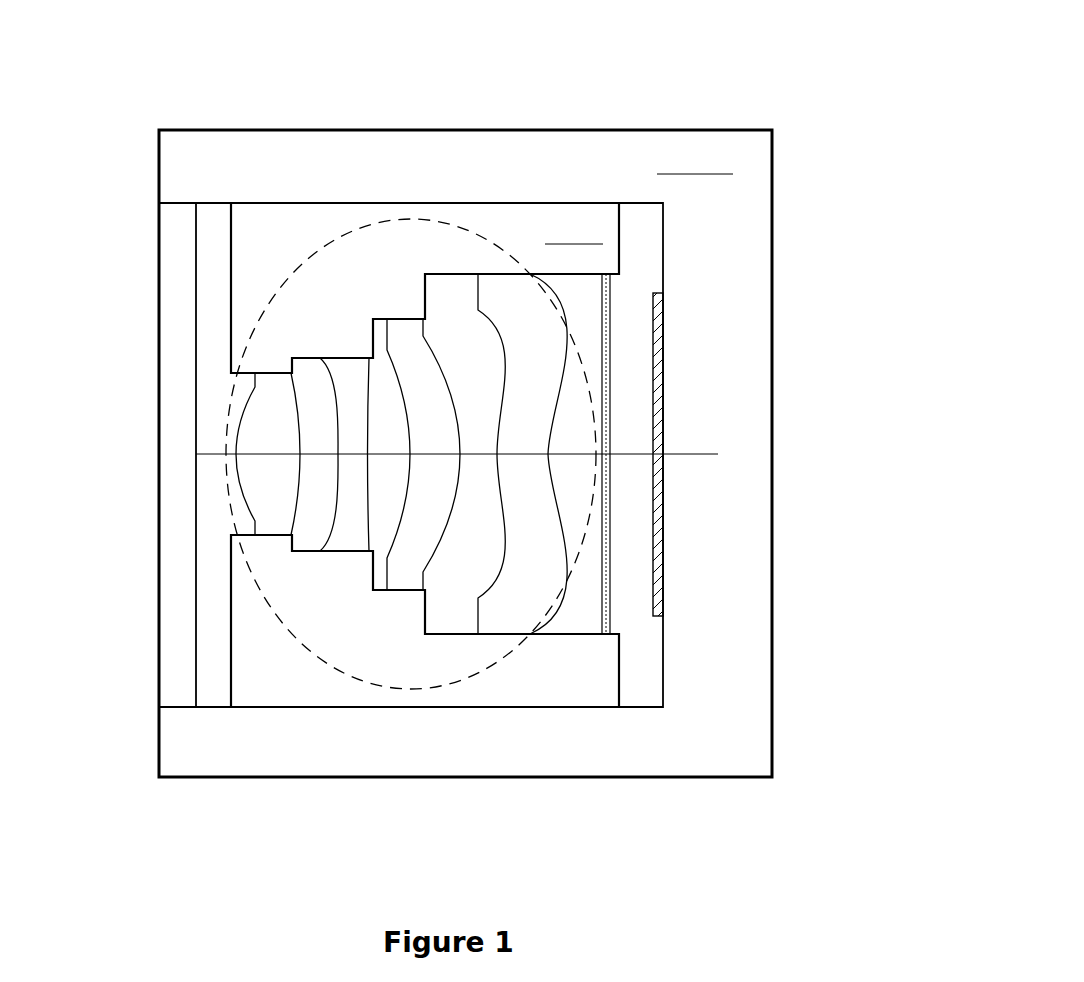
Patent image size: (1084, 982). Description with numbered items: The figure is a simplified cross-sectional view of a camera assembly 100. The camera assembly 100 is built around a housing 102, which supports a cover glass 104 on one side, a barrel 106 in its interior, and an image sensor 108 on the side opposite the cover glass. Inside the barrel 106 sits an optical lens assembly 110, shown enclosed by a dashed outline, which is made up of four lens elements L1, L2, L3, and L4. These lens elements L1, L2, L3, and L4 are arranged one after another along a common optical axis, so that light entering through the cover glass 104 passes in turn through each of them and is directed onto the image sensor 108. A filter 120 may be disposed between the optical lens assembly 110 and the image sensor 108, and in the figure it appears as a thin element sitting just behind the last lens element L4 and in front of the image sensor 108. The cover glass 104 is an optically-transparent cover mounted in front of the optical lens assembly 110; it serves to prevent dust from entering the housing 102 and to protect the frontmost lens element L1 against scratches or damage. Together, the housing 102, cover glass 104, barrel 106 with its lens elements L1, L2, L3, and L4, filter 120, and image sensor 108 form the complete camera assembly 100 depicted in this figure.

The camera assembly 100 is at (706, 44).
The housing 102 is at (708, 756).
The cover glass 104 is at (168, 252).
The barrel 106 is at (601, 682).
The image sensor 108 is at (663, 400).
The optical lens assembly 110 is at (411, 541).
The filter 120 is at (612, 315).
The lens element L1 is at (278, 426).
The lens element L2 is at (365, 396).
The lens element L3 is at (433, 384).
The lens element L4 is at (533, 335).